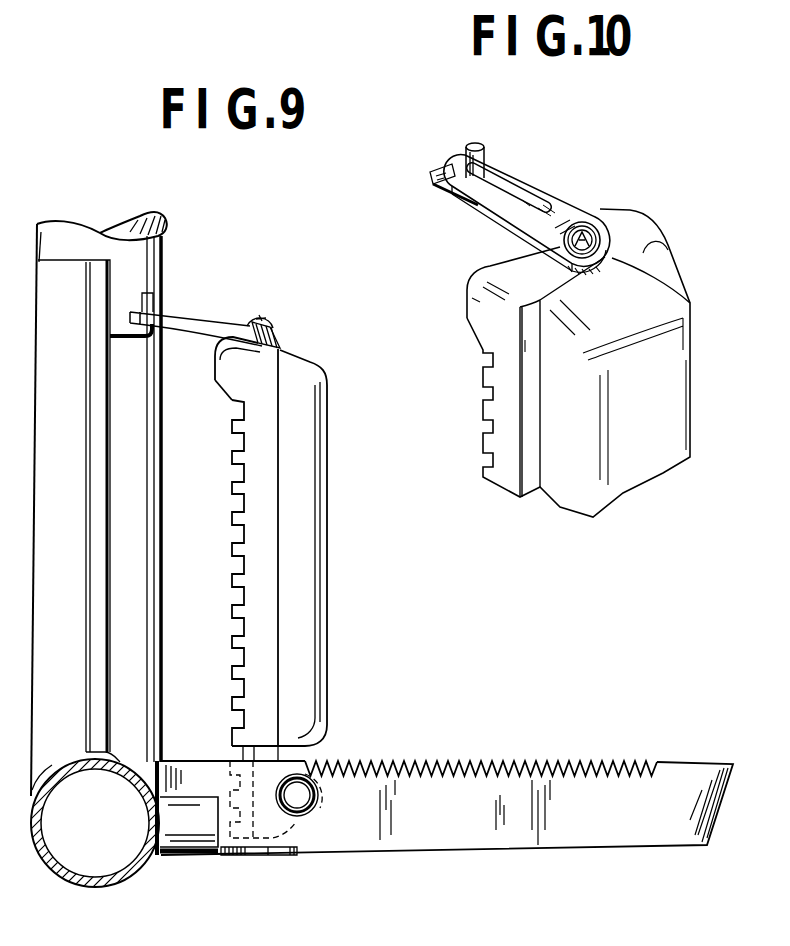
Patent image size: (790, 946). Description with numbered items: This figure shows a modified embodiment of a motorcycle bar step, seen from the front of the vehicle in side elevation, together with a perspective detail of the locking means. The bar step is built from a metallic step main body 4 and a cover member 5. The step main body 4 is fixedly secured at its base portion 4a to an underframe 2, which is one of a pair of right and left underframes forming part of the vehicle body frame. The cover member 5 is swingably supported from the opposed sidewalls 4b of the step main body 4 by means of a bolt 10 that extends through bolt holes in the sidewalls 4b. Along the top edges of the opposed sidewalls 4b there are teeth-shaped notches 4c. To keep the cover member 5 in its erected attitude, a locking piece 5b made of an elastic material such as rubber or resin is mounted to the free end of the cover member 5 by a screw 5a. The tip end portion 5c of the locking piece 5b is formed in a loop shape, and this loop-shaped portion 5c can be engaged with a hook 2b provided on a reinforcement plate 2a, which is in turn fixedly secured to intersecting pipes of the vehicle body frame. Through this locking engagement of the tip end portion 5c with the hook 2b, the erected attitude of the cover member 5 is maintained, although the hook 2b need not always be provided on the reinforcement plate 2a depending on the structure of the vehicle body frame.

In FIG. 9, the underframe 2 is at (86, 887).
In FIG. 9, the reinforcement plate 2a is at (112, 493).
In FIG. 9, the hook 2b is at (154, 300).
In FIG. 10, the hook 2b is at (486, 146).
In FIG. 9, the step main body 4 is at (440, 851).
In FIG. 9, the base portion 4a is at (188, 852).
In FIG. 9, the sidewall 4b is at (524, 851).
In FIG. 9, the teeth-shaped notches 4c is at (468, 766).
In FIG. 9, the cover member 5 is at (332, 504).
In FIG. 10, the cover member 5 is at (560, 478).
In FIG. 9, the screw 5a is at (272, 318).
In FIG. 10, the screw 5a is at (584, 224).
In FIG. 9, the locking piece 5b is at (218, 304).
In FIG. 10, the locking piece 5b is at (548, 175).
In FIG. 9, the tip end portion 5c is at (190, 327).
In FIG. 10, the tip end portion 5c is at (506, 208).
In FIG. 9, the bolt 10 is at (300, 798).